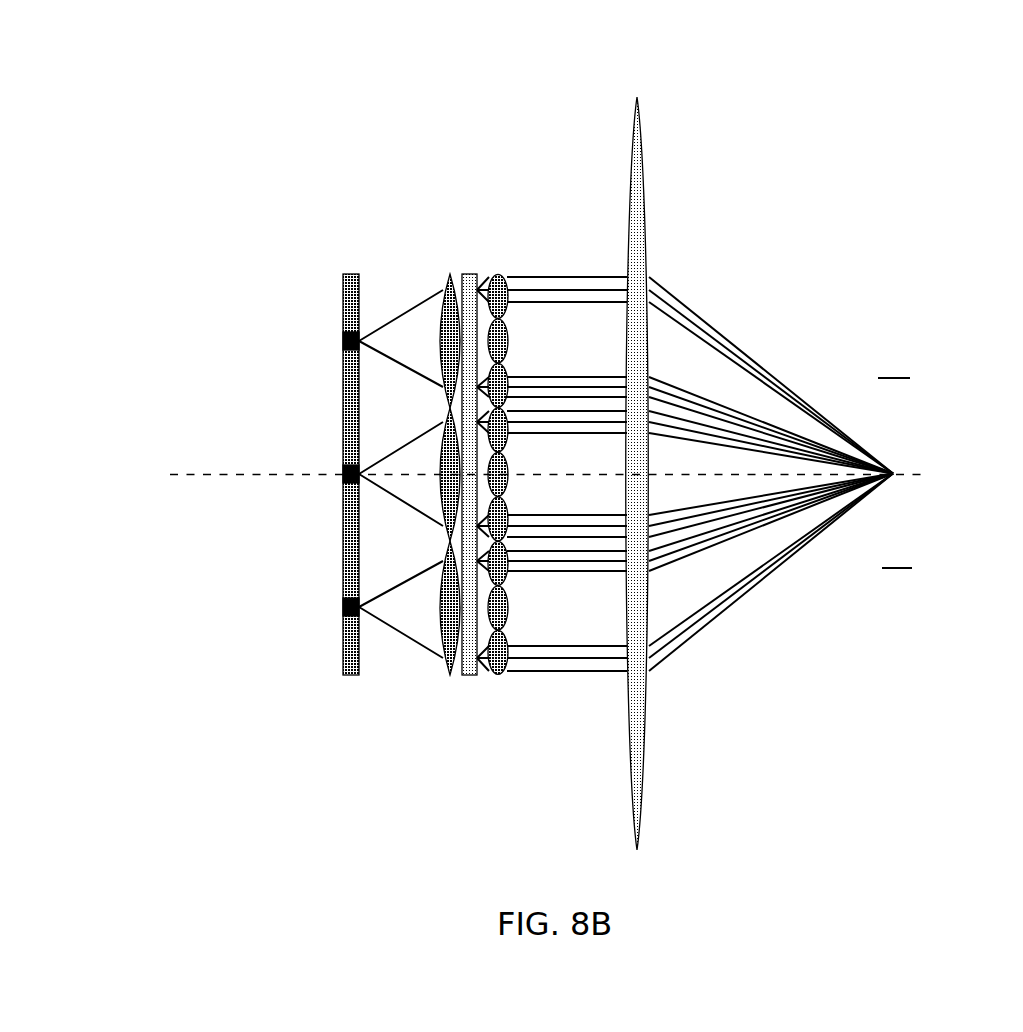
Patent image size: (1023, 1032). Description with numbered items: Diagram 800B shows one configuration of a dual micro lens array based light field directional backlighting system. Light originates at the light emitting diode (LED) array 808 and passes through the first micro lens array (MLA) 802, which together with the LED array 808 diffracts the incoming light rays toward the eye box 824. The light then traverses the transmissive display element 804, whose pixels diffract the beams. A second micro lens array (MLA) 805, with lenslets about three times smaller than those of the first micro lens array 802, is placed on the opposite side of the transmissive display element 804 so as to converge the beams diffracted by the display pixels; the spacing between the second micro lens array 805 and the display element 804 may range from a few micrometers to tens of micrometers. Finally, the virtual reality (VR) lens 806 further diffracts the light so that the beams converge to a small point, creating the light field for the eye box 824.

The diagram 800B is at (612, 36).
The first micro lens array 802 is at (450, 275).
The transmissive display element 804 is at (469, 273).
The second micro lens array 805 is at (498, 273).
The virtual reality lens 806 is at (637, 96).
The light emitting diode array 808 is at (348, 273).
The eye box 824 is at (906, 521).